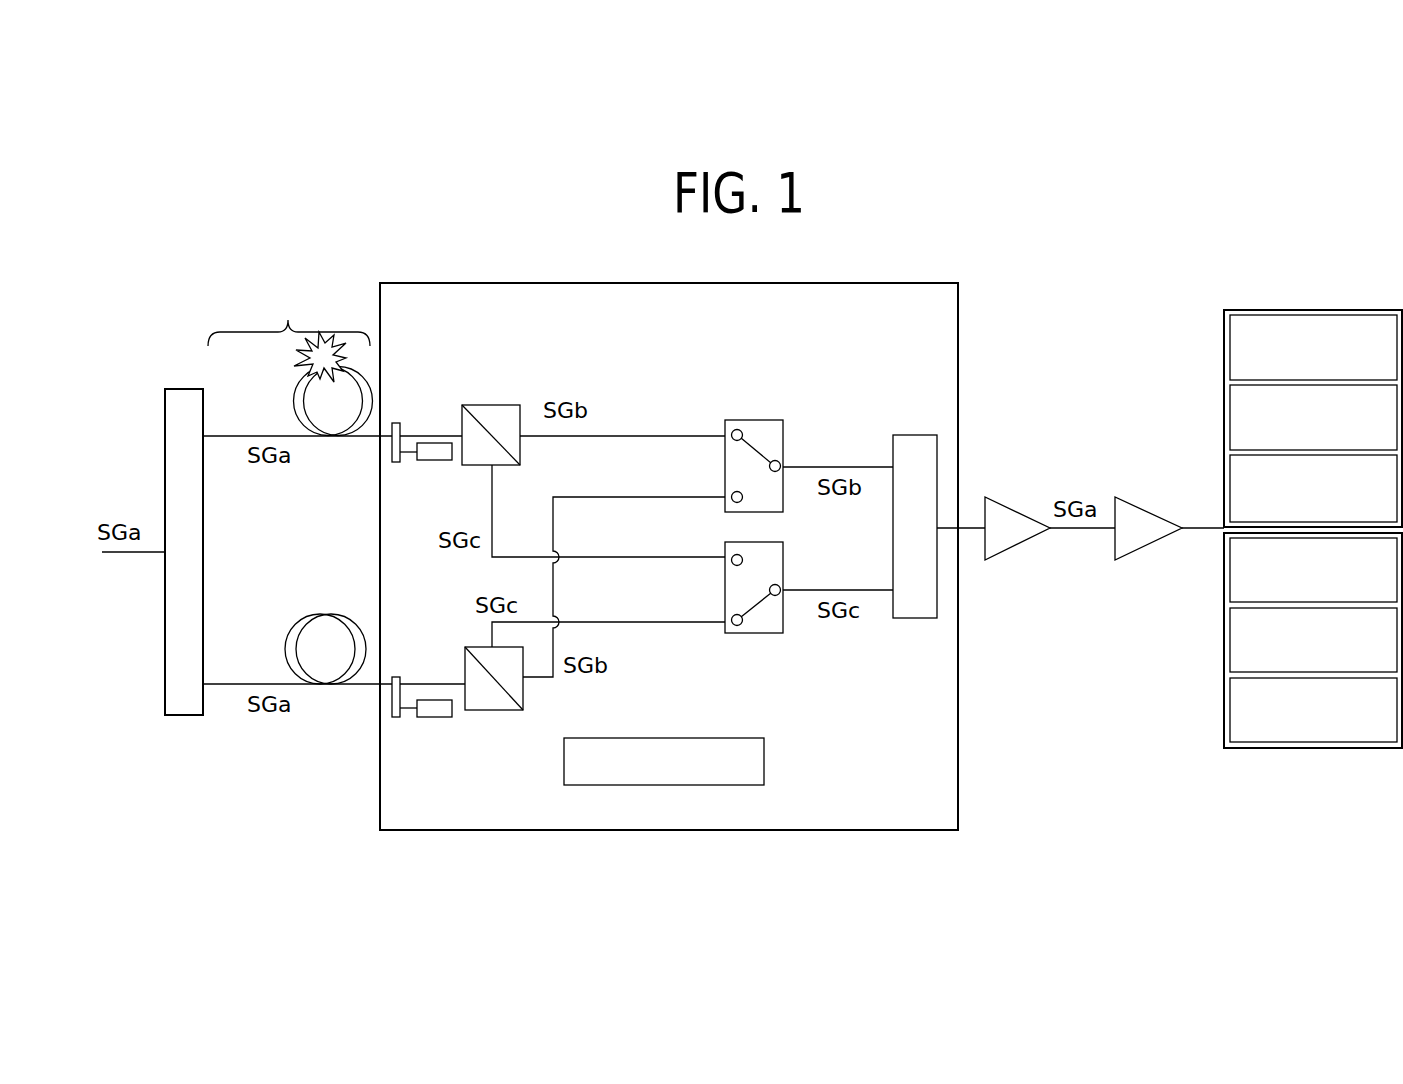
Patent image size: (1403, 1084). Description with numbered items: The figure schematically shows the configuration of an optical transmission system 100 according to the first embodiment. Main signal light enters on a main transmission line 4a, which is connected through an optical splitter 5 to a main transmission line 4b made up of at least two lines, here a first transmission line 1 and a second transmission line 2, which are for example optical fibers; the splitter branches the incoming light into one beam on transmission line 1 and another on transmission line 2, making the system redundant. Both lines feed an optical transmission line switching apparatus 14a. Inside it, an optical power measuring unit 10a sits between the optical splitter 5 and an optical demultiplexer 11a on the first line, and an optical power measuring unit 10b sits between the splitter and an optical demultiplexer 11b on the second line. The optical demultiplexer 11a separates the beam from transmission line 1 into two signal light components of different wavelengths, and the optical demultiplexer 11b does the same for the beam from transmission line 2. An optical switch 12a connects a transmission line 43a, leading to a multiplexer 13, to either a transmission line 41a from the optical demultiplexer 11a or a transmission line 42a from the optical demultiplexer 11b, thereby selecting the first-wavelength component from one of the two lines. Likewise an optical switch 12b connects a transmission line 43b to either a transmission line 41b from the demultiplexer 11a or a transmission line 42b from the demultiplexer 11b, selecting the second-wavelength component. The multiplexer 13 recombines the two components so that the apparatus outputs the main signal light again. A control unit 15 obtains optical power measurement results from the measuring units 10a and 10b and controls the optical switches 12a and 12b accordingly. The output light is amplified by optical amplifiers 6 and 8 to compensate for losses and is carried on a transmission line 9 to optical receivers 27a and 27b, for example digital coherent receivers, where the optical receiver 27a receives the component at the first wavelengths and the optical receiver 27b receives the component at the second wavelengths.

The optical transmission system 100 is at (255, 238).
The transmission line 1 is at (235, 430).
The transmission line 2 is at (235, 680).
The main transmission line 4a is at (124, 558).
The main transmission line 4b is at (290, 360).
The optical splitter 5 is at (180, 716).
The optical amplifier 6 is at (1017, 546).
The optical amplifier 8 is at (1150, 546).
The transmission line 9 is at (1200, 526).
The optical power measuring unit 10a is at (423, 462).
The optical power measuring unit 10b is at (423, 717).
The optical demultiplexer 11a is at (490, 404).
The optical demultiplexer 11b is at (493, 712).
The optical switch 12a is at (753, 419).
The optical switch 12b is at (755, 634).
The multiplexer 13 is at (915, 619).
The optical transmission line switching apparatus 14a is at (431, 283).
The control unit 15 is at (663, 737).
The optical receiver 27a is at (1311, 309).
The optical receiver 27b is at (1313, 749).
The transmission line 41a is at (681, 434).
The transmission line 41b is at (681, 555).
The transmission line 42a is at (611, 496).
The transmission line 42b is at (611, 620).
The transmission line 43a is at (838, 465).
The transmission line 43b is at (838, 588).